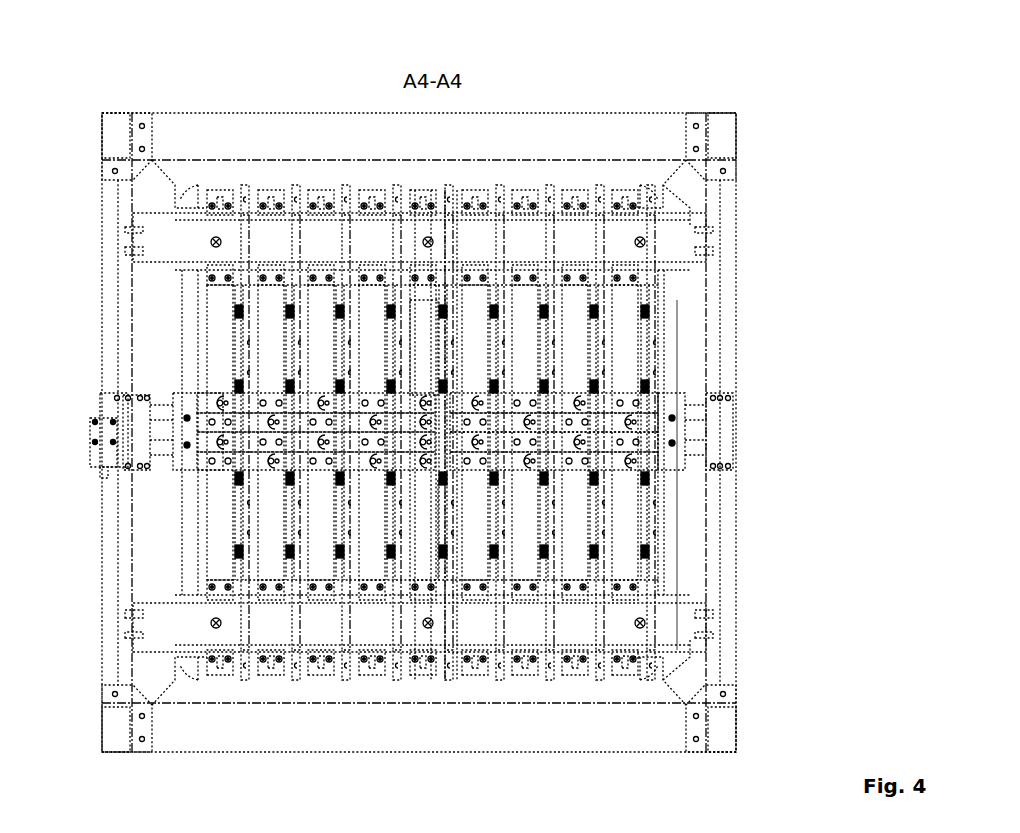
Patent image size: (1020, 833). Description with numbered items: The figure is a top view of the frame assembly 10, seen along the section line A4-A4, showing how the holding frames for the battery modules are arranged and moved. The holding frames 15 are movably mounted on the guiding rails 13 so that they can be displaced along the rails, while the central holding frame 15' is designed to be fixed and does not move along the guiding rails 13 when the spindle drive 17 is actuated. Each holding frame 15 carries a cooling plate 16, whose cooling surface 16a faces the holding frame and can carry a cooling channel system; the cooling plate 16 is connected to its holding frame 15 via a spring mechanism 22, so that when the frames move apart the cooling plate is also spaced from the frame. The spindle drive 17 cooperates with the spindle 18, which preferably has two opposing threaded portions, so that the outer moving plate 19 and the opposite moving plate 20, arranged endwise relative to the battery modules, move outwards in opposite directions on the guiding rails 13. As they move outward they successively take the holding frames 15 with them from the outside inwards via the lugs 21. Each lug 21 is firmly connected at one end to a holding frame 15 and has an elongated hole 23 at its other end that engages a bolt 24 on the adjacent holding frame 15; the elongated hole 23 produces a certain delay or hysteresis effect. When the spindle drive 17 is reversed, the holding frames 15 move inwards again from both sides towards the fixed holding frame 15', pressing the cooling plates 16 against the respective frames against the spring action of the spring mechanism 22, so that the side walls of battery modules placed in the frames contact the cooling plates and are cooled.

The frame assembly 10 is at (676, 82).
The guiding rails 13 is at (165, 230).
The holding frame 15 is at (419, 174).
The central holding frame 15' is at (433, 318).
The cooling plate 16 is at (402, 583).
The cooling surface 16a is at (402, 345).
The spindle drive 17 is at (73, 398).
The spindle 18 is at (158, 433).
The moving plate 19 is at (197, 327).
The moving plate 20 is at (660, 365).
The lug 21 is at (429, 436).
The spring mechanism 22 is at (443, 570).
The elongated hole 23 is at (320, 405).
The bolt 24 is at (328, 404).